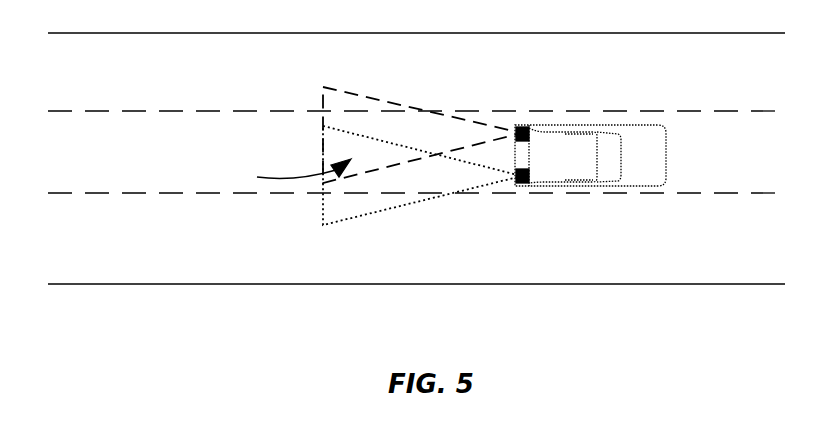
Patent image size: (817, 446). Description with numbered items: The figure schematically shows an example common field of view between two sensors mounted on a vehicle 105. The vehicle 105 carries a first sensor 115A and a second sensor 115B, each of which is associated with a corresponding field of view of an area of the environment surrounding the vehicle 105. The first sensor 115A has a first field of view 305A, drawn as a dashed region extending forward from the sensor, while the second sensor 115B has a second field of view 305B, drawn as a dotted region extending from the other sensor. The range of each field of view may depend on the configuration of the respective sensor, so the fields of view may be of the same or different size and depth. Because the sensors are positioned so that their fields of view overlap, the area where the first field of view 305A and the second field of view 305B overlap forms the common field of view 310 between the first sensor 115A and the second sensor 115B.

The vehicle 105 is at (665, 168).
The first sensor 115A is at (523, 127).
The second sensor 115B is at (523, 184).
The first field of view 305A is at (368, 97).
The second field of view 305B is at (403, 203).
The common field of view 310 is at (283, 170).